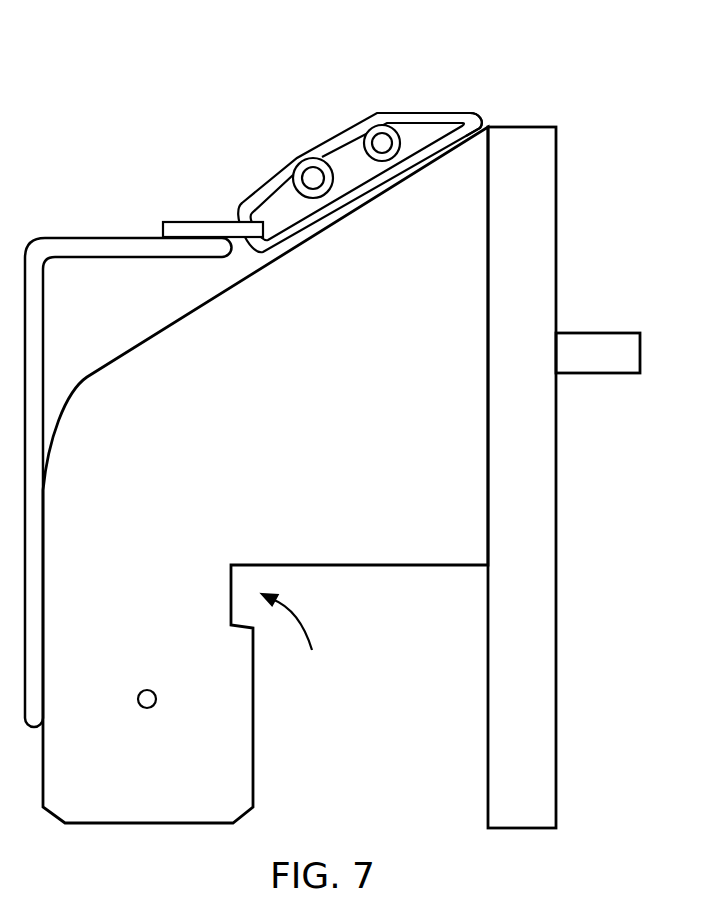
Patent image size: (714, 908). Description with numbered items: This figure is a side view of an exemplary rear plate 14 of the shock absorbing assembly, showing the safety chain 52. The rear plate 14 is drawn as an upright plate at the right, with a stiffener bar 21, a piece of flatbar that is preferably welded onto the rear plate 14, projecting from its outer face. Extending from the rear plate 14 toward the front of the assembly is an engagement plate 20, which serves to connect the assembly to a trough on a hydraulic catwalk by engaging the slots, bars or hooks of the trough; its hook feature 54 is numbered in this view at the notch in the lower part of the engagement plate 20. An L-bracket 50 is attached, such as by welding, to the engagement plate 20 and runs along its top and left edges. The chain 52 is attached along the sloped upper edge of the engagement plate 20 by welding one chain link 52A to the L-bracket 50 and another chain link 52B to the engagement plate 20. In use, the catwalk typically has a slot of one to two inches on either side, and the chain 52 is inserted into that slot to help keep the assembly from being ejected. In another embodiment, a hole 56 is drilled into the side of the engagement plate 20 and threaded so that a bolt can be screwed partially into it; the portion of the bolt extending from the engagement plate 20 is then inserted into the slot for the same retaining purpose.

The rear plate 14 is at (538, 126).
The engagement plate 20 is at (342, 441).
The stiffener bar 21 is at (612, 333).
The L-bracket 50 is at (57, 236).
The safety chain 52 is at (325, 141).
The chain link 52A is at (190, 221).
The chain link 52B is at (476, 125).
The hook feature 54 is at (295, 639).
The hole 56 is at (140, 690).